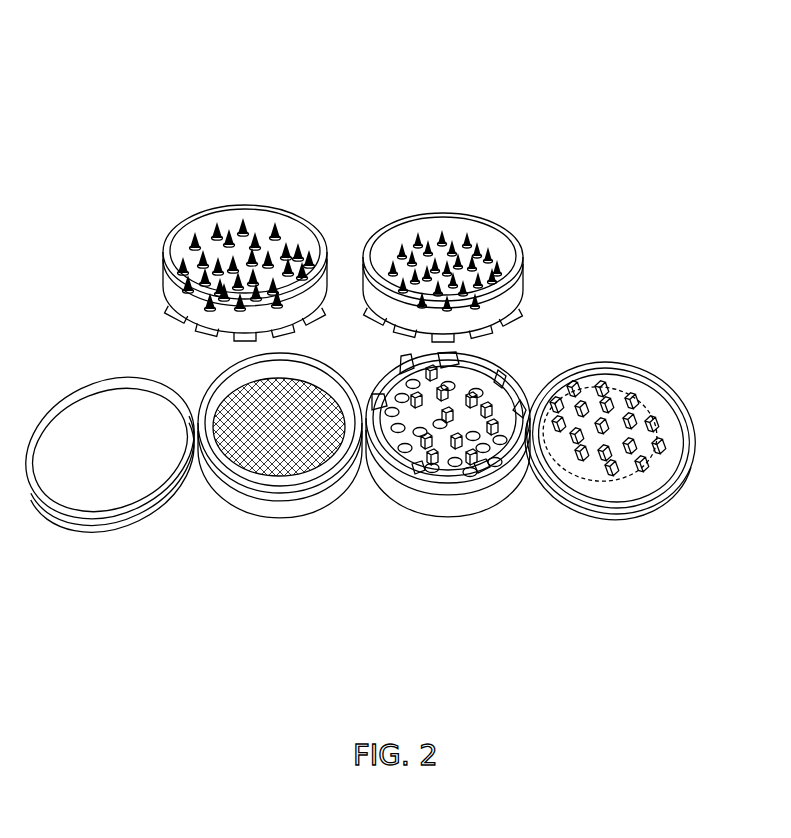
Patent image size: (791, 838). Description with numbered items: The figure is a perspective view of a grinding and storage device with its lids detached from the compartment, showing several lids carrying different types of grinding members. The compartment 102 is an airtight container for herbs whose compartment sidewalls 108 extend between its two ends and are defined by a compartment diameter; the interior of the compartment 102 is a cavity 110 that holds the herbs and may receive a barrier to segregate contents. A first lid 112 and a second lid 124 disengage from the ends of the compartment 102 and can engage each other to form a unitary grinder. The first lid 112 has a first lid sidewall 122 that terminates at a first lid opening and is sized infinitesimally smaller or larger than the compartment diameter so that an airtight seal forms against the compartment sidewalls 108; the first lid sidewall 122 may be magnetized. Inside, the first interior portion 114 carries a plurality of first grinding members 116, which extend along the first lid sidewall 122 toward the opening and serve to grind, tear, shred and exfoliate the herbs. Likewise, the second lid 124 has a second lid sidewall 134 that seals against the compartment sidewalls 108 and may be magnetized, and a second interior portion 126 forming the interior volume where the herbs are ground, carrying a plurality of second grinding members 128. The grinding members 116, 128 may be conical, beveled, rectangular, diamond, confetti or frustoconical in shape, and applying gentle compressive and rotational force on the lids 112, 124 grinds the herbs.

The compartment 102 is at (125, 536).
The compartment sidewalls 108 is at (236, 461).
The cavity 110 is at (258, 427).
The first lid 112 is at (329, 366).
The first lid interior portion 114 is at (520, 370).
The first grinding members 116 is at (205, 232).
The first lid sidewall 122 is at (163, 268).
The second lid 124 is at (560, 338).
The second lid interior portion 126 is at (617, 390).
The second grinding members 128 is at (415, 215).
The second lid sidewall 134 is at (522, 268).